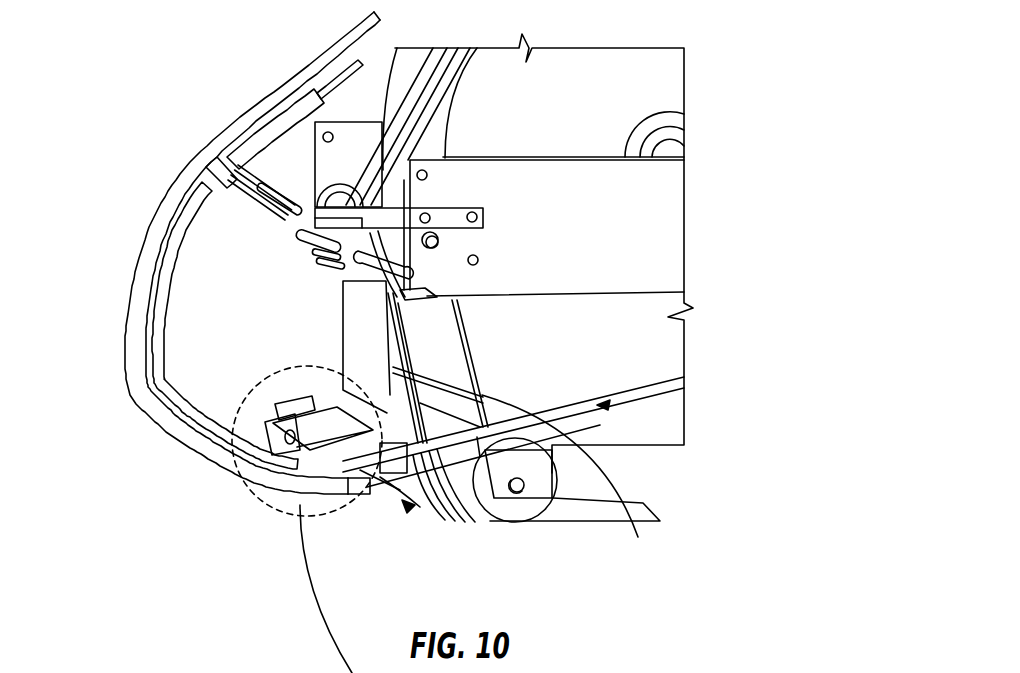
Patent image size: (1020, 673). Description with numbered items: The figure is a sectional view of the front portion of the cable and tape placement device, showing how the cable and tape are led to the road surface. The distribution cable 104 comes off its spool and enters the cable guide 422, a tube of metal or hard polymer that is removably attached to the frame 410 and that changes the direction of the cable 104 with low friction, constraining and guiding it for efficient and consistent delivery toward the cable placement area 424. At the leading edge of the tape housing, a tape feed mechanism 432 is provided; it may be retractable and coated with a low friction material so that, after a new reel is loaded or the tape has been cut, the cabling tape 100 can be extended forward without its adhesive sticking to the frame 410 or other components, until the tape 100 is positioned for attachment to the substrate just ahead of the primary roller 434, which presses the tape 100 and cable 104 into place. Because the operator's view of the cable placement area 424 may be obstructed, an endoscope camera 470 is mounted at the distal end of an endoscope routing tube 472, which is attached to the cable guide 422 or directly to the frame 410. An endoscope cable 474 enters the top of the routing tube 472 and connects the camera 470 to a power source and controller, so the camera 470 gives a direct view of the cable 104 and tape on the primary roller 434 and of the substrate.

The cabling tape 100 is at (613, 508).
The distribution cable 104 is at (368, 48).
The frame 410 is at (600, 406).
The cable guide 422 is at (157, 267).
The cable placement area 424 is at (406, 505).
The tape feed mechanism 432 is at (360, 330).
The primary roller 434 is at (510, 508).
The endoscope camera 470 is at (352, 483).
The endoscope routing tube 472 is at (145, 413).
The endoscope cable 474 is at (256, 110).